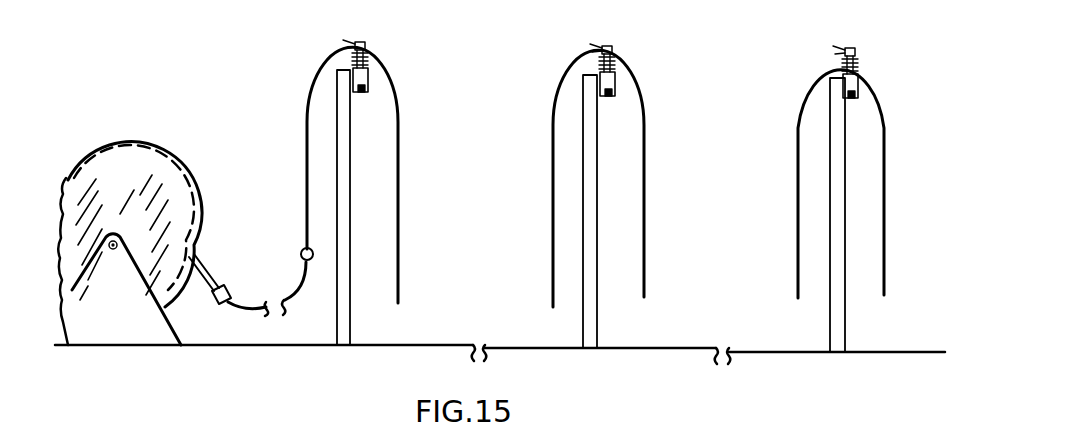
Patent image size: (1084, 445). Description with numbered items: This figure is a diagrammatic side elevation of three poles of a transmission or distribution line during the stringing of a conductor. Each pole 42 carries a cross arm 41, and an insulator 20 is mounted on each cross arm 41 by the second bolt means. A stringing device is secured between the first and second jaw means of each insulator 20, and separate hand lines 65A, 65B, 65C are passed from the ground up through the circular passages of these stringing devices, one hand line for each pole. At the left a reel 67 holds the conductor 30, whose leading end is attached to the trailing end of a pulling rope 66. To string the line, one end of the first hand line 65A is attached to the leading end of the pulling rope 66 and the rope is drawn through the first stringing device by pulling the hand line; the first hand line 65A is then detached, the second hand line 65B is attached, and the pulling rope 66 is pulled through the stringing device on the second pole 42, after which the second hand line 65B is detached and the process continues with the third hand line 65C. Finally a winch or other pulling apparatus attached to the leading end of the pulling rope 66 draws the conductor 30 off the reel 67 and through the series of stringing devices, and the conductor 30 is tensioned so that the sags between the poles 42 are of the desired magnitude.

The insulator 20 is at (380, 42).
The cross arm 41 is at (366, 83).
The pole 42 is at (342, 127).
The first hand line 65A is at (399, 293).
The second hand line 65B is at (552, 266).
The third hand line 65C is at (795, 290).
The conductor 30 is at (198, 259).
The pulling rope 66 is at (291, 284).
The reel 67 is at (138, 332).